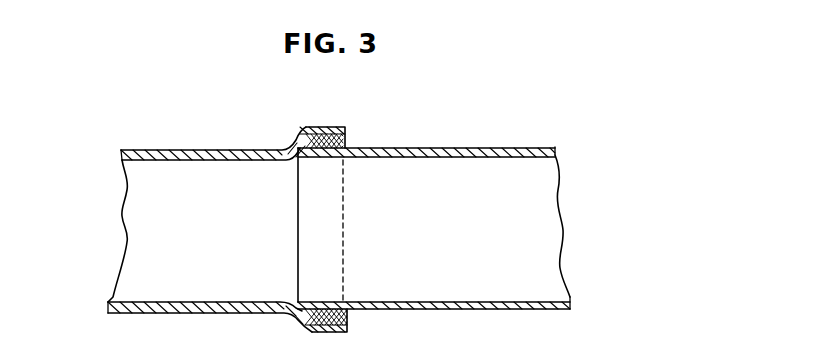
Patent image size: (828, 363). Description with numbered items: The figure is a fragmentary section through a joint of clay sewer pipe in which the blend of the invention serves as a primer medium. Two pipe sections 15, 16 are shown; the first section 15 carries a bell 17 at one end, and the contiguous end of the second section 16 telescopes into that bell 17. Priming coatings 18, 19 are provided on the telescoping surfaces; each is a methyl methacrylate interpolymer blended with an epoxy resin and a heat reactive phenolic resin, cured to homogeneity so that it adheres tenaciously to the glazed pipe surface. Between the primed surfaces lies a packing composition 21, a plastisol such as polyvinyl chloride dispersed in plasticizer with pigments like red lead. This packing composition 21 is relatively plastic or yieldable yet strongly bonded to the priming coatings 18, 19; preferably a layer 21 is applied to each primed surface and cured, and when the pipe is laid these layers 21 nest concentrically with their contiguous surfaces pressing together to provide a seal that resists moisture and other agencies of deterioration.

The section of sewer pipe 15 is at (170, 150).
The section of sewer pipe 16 is at (470, 148).
The bell 17 is at (325, 127).
The priming coating 18 is at (328, 306).
The priming coating 19 is at (340, 332).
The packing composition 21 is at (340, 146).